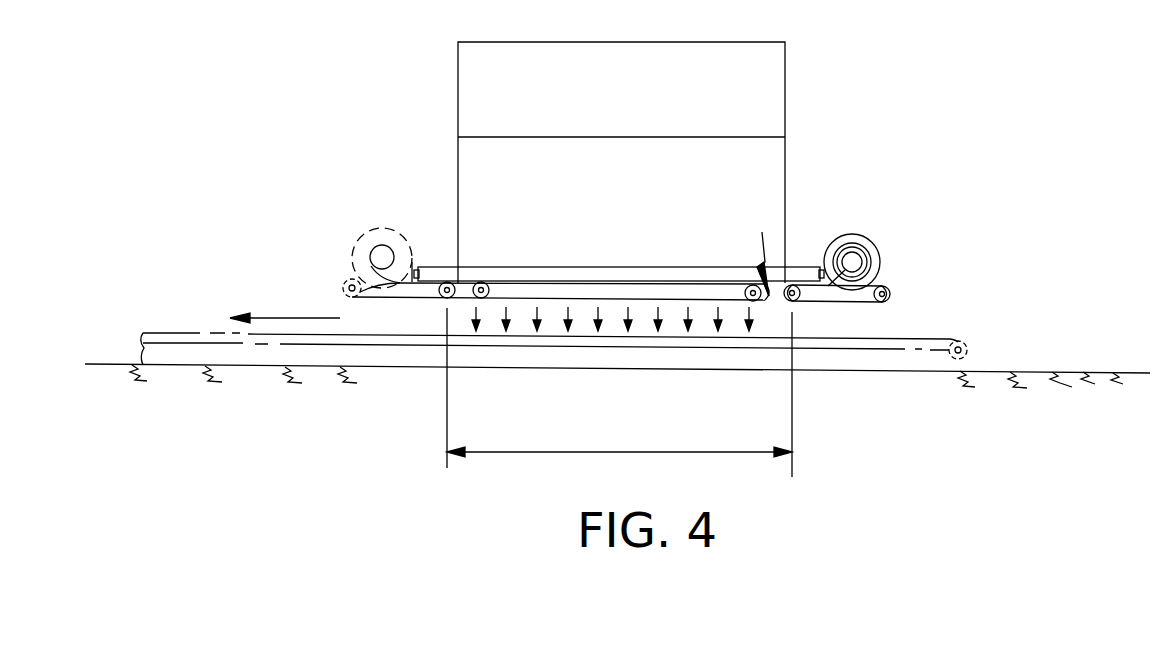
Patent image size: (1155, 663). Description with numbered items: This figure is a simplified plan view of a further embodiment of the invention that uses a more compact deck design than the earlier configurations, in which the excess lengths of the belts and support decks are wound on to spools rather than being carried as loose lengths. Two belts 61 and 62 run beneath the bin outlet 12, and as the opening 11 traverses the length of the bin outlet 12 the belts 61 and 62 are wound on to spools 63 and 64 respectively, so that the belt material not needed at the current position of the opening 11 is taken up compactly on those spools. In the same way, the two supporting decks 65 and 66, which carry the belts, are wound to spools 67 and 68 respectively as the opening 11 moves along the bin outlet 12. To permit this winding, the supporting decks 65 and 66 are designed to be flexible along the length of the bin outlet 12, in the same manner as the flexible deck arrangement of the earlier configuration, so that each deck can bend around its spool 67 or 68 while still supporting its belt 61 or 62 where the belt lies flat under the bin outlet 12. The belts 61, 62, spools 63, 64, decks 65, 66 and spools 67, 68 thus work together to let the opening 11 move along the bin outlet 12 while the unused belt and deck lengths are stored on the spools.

The opening 11 is at (760, 252).
The bin outlet 12 is at (520, 265).
The belt 61 is at (845, 303).
The belt 62 is at (400, 300).
The spool 63 is at (891, 294).
The spool 64 is at (343, 283).
The supporting deck 65 is at (826, 284).
The supporting deck 66 is at (412, 282).
The spool 67 is at (863, 238).
The spool 68 is at (360, 236).